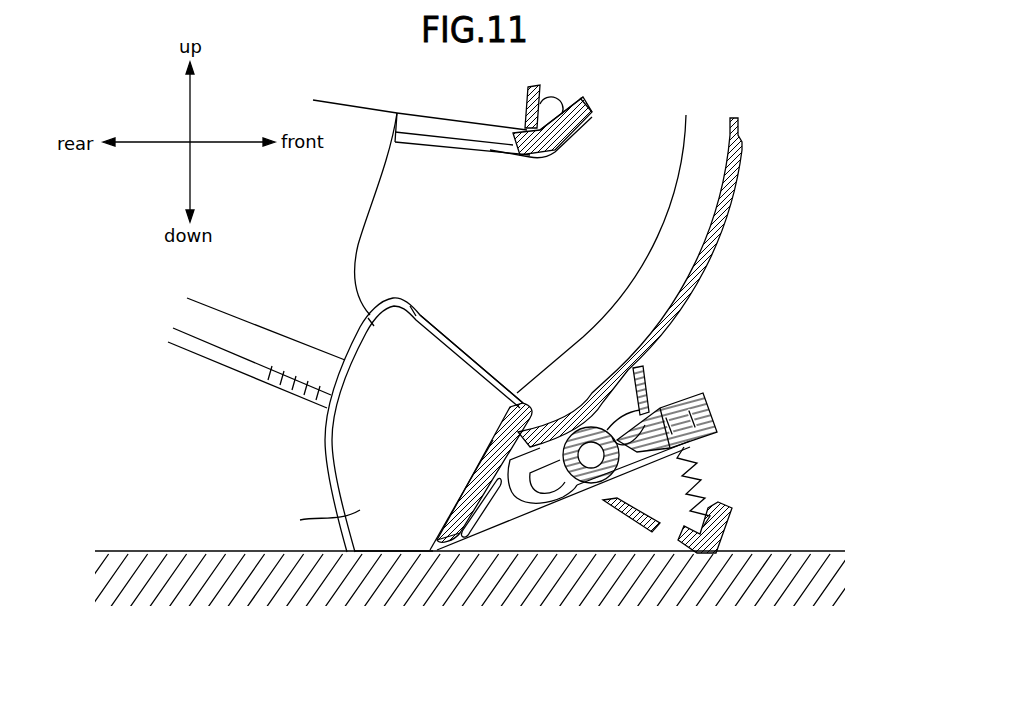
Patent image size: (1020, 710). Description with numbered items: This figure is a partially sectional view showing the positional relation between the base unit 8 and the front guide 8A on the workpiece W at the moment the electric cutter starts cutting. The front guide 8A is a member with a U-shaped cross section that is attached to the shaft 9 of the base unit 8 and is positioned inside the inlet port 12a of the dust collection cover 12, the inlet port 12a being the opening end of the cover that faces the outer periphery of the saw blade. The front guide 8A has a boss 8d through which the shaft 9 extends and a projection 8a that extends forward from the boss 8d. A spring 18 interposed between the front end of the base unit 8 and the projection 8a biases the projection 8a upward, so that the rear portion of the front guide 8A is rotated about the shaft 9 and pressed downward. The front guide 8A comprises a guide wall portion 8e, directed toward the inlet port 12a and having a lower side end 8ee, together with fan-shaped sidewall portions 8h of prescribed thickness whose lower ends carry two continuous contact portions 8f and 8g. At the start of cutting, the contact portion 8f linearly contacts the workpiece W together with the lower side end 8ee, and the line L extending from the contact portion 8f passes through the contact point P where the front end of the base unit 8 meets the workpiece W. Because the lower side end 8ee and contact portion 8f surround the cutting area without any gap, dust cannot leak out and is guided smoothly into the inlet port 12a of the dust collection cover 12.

The inlet port 12a is at (425, 222).
The dust collection cover 12 is at (723, 231).
The base unit 8 is at (730, 533).
The front guide 8A is at (328, 496).
The projection 8a is at (712, 405).
The boss 8d is at (637, 411).
The guide wall portion 8e is at (462, 492).
The lower side end 8ee is at (458, 540).
The contact portion 8f is at (417, 540).
The contact portion 8g is at (510, 518).
The sidewall portion 8h is at (300, 520).
The shaft 9 is at (588, 462).
The spring 18 is at (705, 474).
The workpiece W is at (215, 550).
The contact point P is at (707, 552).
The line L is at (470, 574).